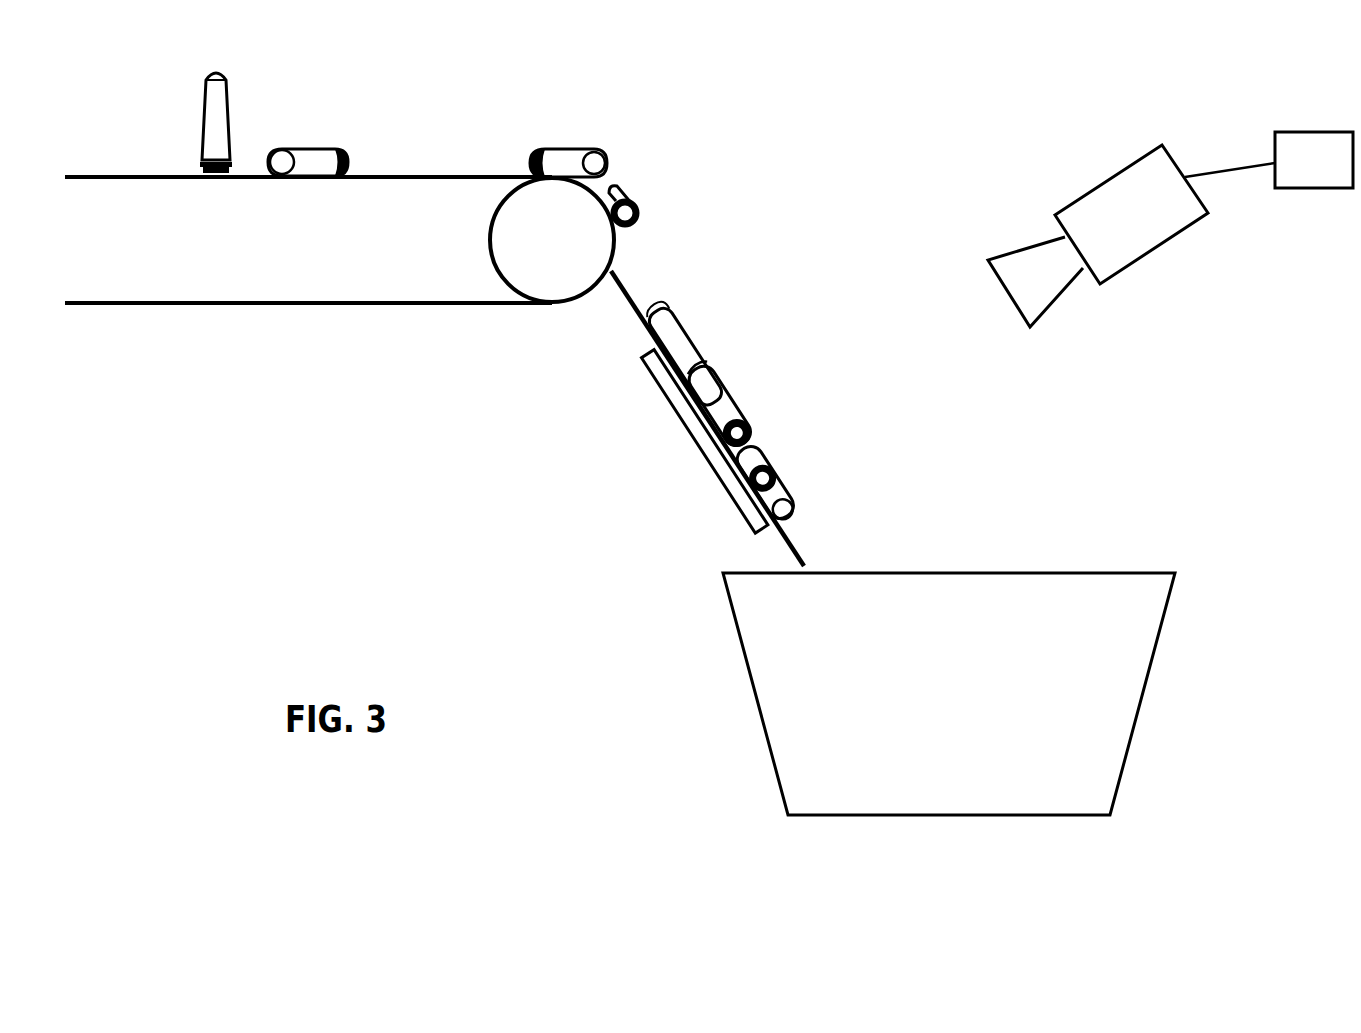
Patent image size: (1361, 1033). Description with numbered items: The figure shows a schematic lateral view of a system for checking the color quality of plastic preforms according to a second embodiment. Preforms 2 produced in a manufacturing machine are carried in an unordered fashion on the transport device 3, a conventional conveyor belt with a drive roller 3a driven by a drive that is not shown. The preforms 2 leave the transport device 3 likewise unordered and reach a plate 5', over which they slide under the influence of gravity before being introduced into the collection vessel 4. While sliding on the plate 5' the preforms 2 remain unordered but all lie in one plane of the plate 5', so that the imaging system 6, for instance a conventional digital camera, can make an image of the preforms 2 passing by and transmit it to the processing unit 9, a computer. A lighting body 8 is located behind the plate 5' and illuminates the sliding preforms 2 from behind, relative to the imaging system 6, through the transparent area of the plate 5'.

The preforms 2 is at (322, 154).
The transport device 3 is at (288, 305).
The drive roller 3a is at (550, 250).
The collection vessel 4 is at (1117, 685).
The plate 5' is at (677, 418).
The imaging system 6 is at (1166, 170).
The lighting body 8 is at (680, 403).
The processing unit 9 is at (1318, 175).